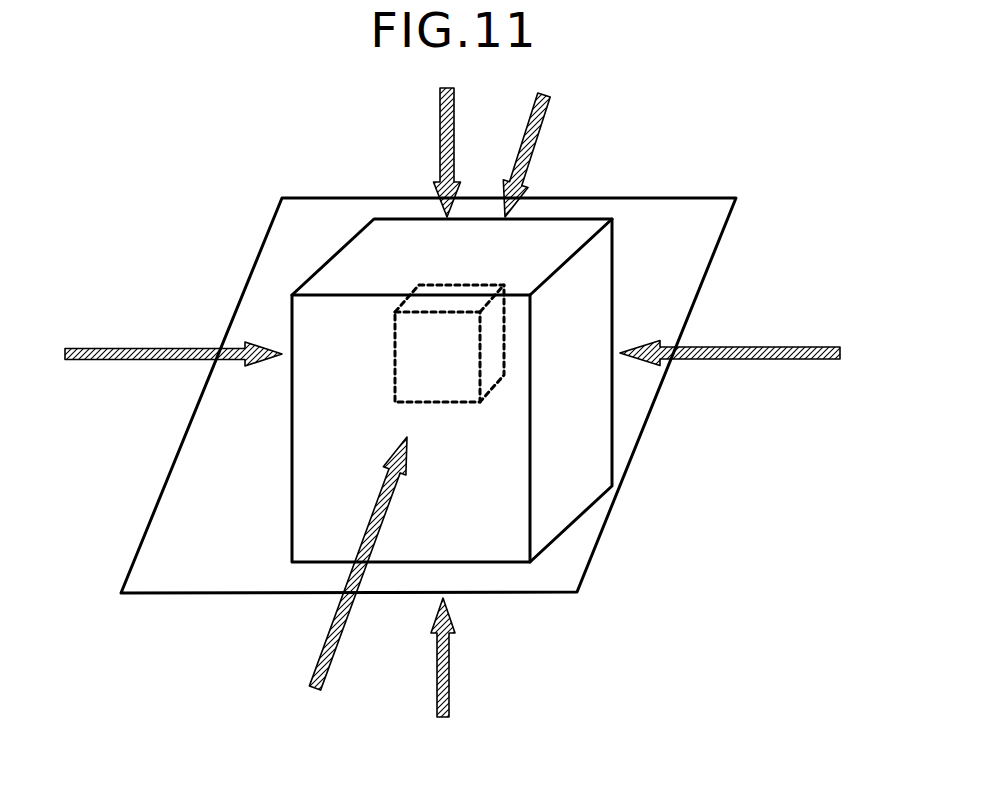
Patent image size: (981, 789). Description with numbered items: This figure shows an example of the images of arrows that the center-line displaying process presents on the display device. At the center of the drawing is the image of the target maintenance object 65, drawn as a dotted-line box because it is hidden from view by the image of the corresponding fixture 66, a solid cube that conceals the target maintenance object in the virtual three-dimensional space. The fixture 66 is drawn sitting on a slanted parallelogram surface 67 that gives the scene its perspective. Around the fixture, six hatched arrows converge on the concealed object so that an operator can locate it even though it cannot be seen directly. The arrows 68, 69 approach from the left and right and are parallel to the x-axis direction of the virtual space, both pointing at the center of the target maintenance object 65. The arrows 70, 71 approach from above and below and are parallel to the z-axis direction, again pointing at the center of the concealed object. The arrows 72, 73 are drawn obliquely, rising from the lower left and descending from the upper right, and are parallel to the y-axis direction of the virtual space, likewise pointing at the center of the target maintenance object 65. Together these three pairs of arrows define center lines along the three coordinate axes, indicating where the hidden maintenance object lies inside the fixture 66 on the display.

The target maintenance object 65 is at (509, 335).
The fixture 66 is at (612, 452).
The reference plane 67 is at (690, 198).
The arrow 68 is at (128, 348).
The arrow 69 is at (767, 345).
The arrow 70 is at (440, 141).
The arrow 71 is at (452, 652).
The arrow 72 is at (331, 627).
The arrow 73 is at (538, 136).